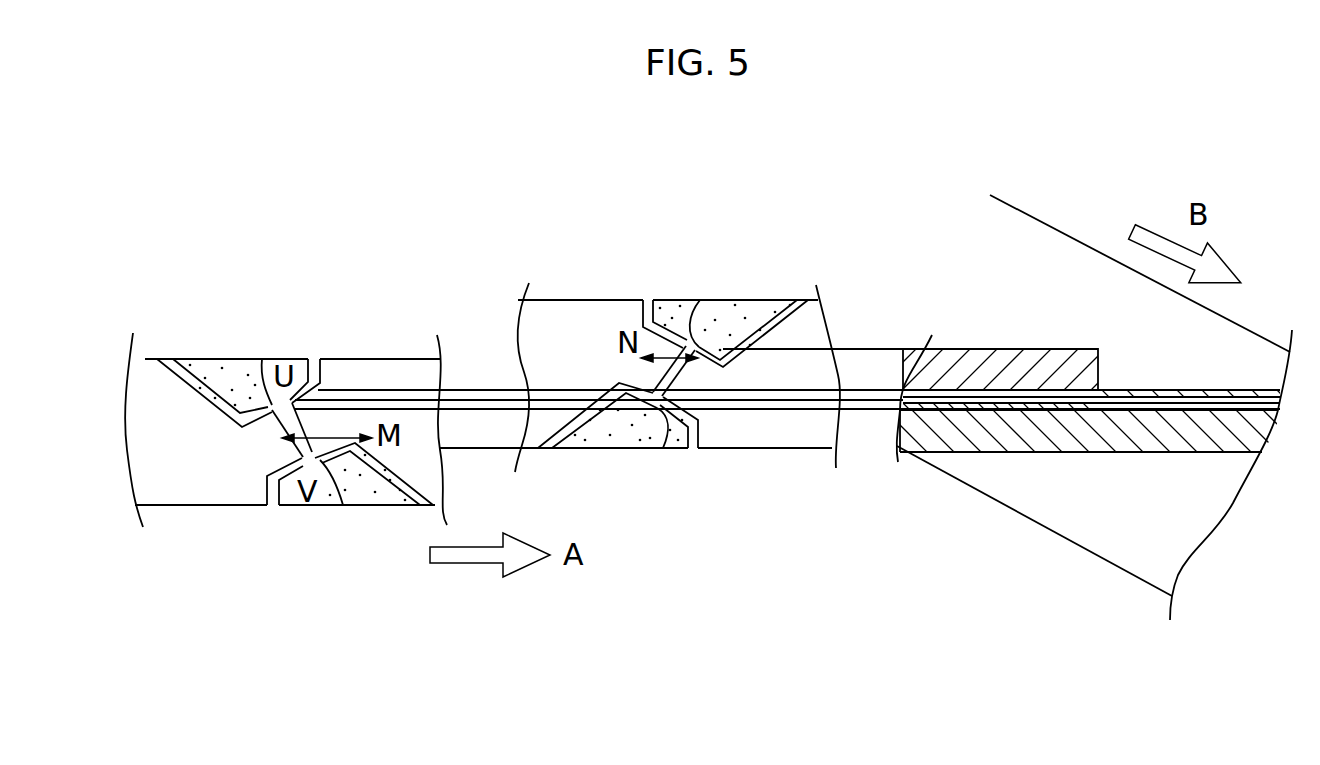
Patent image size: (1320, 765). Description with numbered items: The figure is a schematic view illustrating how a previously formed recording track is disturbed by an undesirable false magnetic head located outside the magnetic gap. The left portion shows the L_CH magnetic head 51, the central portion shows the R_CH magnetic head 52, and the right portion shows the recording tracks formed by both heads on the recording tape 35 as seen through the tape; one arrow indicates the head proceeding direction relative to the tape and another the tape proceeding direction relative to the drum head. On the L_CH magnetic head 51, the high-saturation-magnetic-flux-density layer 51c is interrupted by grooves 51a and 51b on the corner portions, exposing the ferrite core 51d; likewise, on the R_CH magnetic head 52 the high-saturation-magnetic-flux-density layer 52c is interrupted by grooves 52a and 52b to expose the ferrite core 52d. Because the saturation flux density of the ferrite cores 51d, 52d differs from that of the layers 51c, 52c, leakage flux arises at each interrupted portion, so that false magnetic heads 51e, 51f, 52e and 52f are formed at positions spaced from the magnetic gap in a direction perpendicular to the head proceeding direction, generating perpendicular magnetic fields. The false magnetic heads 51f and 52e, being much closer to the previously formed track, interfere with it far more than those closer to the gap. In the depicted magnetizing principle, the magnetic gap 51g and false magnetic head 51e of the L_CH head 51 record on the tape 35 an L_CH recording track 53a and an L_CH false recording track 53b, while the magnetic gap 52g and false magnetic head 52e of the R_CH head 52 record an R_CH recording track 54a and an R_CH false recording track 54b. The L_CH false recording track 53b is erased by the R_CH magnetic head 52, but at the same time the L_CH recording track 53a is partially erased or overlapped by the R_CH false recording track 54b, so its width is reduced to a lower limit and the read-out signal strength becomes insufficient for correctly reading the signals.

The L_CH magnetic head 51 is at (150, 347).
The groove 51a is at (258, 355).
The groove 51b is at (342, 503).
The high-saturation-magnetic-flux-density layer 51c is at (210, 355).
The ferrite core 51d is at (422, 355).
The false magnetic head 51e is at (337, 355).
The false magnetic head 51f is at (283, 503).
The magnetic gap 51g is at (275, 441).
The R_CH magnetic head 52 is at (547, 286).
The groove 52a is at (702, 328).
The groove 52b is at (645, 412).
The high-saturation-magnetic-flux-density layer 52c is at (758, 325).
The ferrite core 52d is at (571, 295).
The false magnetic head 52e is at (678, 425).
The false magnetic head 52f is at (684, 322).
The magnetic gap 52g is at (643, 378).
The L_CH recording track 53a is at (1155, 437).
The L_CH false recording track 53b is at (1107, 420).
The R_CH recording track 54a is at (977, 362).
The R_CH false recording track 54b is at (1042, 385).
The recording tape 35 is at (1003, 480).